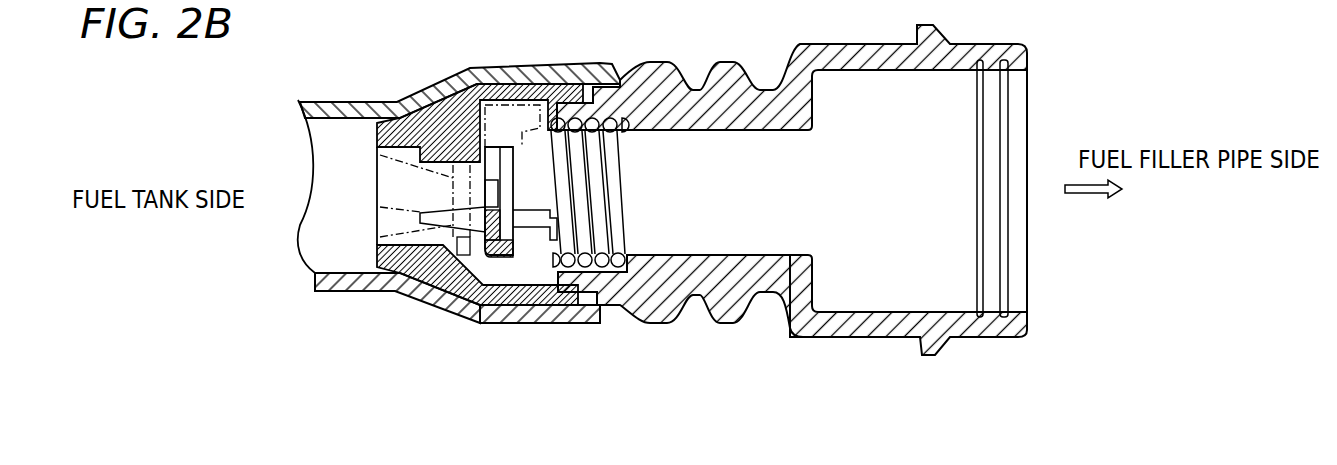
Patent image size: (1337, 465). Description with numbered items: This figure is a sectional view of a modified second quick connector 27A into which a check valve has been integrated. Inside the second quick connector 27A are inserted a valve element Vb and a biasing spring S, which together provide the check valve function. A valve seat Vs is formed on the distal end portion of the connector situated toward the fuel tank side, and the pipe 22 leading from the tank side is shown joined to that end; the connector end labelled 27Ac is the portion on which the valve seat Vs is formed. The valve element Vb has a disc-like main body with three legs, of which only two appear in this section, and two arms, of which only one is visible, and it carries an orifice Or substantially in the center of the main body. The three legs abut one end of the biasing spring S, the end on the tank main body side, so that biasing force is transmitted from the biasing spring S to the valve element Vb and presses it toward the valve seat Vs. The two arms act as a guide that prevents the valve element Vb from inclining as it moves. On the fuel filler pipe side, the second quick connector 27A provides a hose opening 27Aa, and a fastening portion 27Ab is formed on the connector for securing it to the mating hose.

The fuel tank side pipe 22 is at (343, 102).
The second quick connector 27A is at (792, 196).
The hose opening 27Aa is at (673, 280).
The fastening portion 27Ab is at (843, 340).
The crimped connecting portion 27Ac is at (478, 323).
The valve element Vb is at (520, 97).
The valve seat Vs is at (457, 90).
The orifice Or is at (492, 197).
The biasing spring S is at (618, 187).